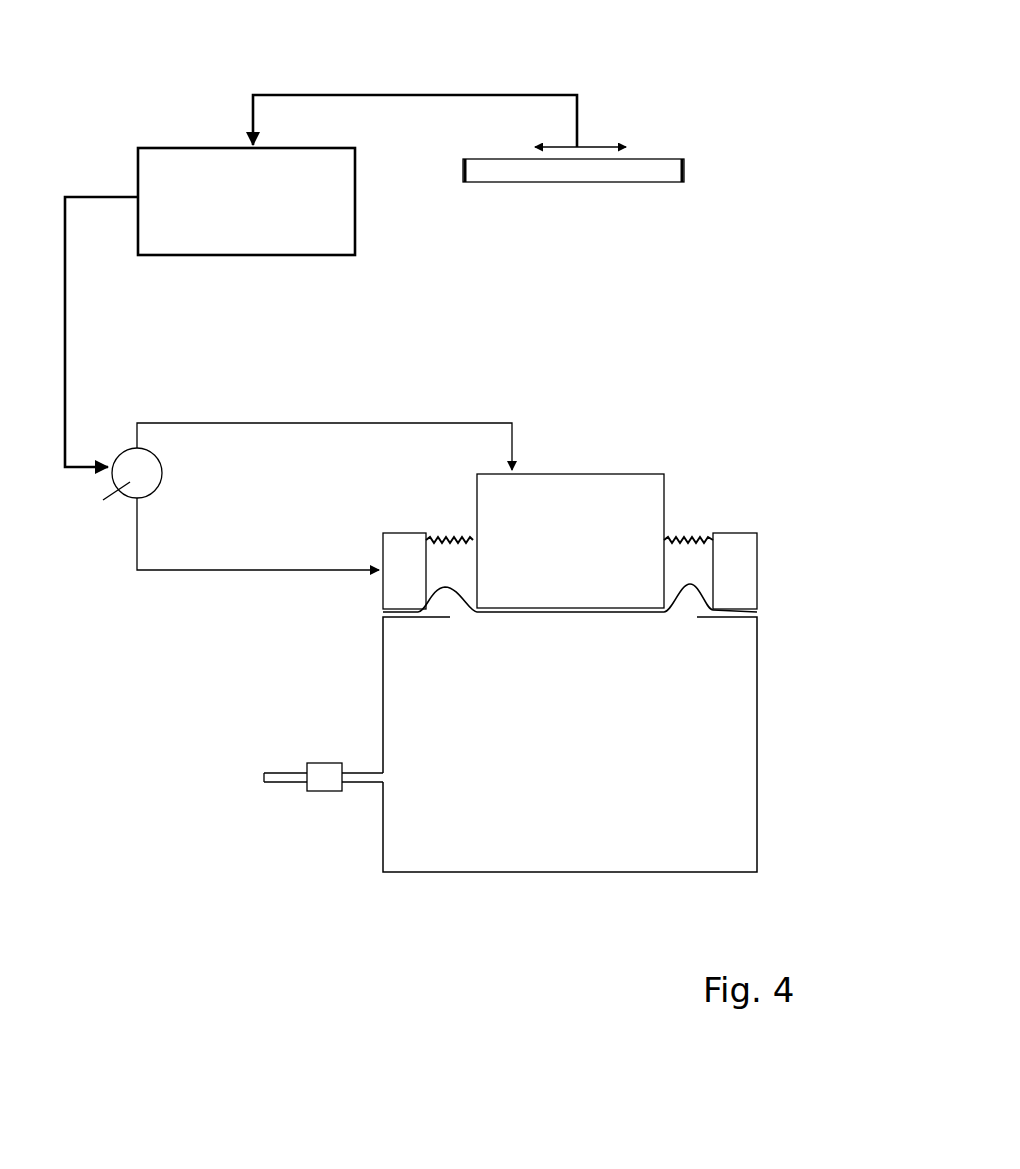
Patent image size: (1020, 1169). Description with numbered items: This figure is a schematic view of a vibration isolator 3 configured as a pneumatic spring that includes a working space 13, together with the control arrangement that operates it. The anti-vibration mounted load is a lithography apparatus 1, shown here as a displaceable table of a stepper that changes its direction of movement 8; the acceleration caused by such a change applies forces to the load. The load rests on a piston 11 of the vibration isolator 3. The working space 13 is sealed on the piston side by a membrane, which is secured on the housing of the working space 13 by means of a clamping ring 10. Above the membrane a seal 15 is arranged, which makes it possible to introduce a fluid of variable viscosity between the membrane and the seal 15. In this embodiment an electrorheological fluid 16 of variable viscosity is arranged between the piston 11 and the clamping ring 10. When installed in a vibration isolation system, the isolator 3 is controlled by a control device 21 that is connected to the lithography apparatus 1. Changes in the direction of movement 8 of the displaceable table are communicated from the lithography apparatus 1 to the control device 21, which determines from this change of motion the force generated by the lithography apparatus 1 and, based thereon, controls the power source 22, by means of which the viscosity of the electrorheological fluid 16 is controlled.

The lithography apparatus 1 is at (658, 171).
The vibration isolator 3 is at (275, 695).
The direction of movement 8 is at (602, 147).
The clamping ring 10 is at (401, 558).
The piston 11 is at (549, 523).
The working space 13 is at (580, 775).
The seal 15 is at (688, 535).
The electrorheological fluid 16 is at (695, 563).
The control device 21 is at (231, 195).
The power source 22 is at (148, 462).